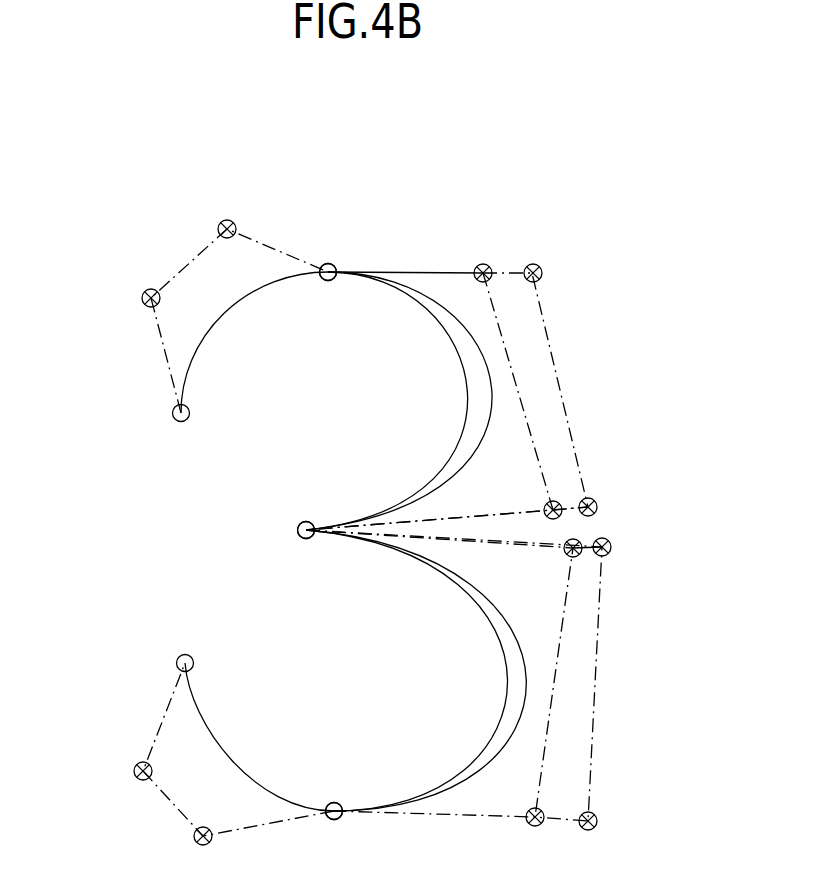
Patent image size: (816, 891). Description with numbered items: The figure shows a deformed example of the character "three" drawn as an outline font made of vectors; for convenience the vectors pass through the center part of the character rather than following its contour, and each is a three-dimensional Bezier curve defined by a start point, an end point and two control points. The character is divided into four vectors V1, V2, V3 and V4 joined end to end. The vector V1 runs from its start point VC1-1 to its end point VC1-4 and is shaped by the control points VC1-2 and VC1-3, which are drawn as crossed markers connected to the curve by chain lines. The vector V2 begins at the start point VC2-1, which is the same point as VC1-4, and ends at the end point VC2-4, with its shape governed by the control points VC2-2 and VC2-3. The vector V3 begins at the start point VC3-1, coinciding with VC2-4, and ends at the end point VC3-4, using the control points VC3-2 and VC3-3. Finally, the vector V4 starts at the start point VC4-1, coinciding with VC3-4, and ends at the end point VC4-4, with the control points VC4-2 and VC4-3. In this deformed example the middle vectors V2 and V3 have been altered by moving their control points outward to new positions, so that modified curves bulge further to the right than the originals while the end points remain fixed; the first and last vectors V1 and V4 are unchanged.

The vector V1 is at (254, 342).
The vector V2 is at (389, 401).
The vector V3 is at (407, 670).
The vector V4 is at (259, 737).
The start point VC1-1 is at (180, 430).
The control point VC1-2 is at (119, 282).
The control point VC1-3 is at (228, 213).
The end point VC1-4 is at (330, 289).
The start point VC2-1 is at (335, 255).
The control point VC2-2 is at (483, 256).
The control point VC2-3 is at (513, 500).
The end point VC2-4 is at (305, 514).
The start point VC3-1 is at (305, 548).
The control point VC3-2 is at (532, 561).
The control point VC3-3 is at (533, 834).
The end point VC3-4 is at (335, 794).
The start point VC4-1 is at (335, 830).
The control point VC4-2 is at (203, 853).
The control point VC4-3 is at (101, 772).
The end point VC4-4 is at (185, 647).